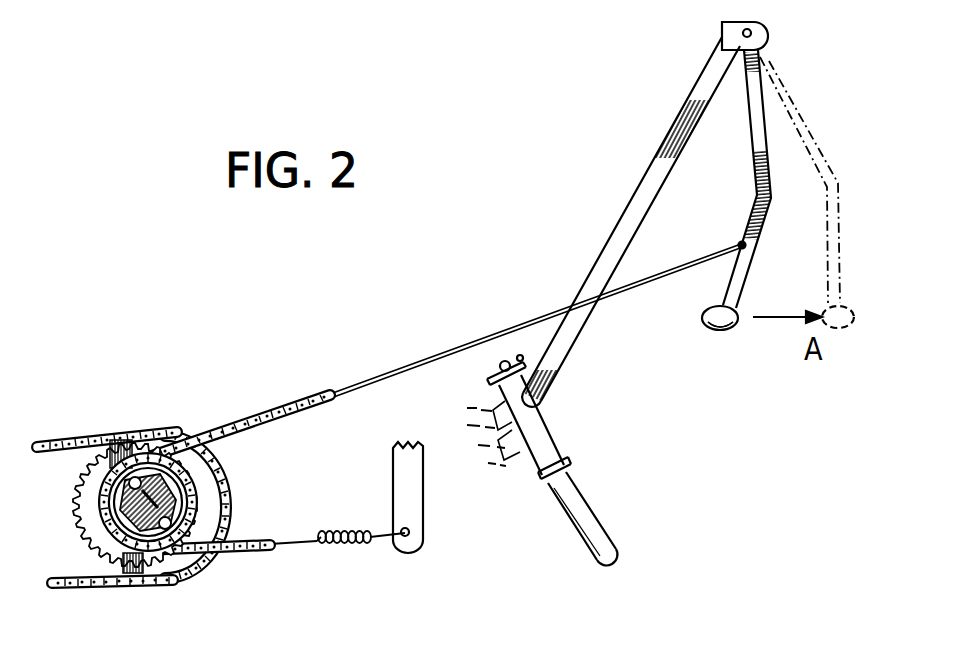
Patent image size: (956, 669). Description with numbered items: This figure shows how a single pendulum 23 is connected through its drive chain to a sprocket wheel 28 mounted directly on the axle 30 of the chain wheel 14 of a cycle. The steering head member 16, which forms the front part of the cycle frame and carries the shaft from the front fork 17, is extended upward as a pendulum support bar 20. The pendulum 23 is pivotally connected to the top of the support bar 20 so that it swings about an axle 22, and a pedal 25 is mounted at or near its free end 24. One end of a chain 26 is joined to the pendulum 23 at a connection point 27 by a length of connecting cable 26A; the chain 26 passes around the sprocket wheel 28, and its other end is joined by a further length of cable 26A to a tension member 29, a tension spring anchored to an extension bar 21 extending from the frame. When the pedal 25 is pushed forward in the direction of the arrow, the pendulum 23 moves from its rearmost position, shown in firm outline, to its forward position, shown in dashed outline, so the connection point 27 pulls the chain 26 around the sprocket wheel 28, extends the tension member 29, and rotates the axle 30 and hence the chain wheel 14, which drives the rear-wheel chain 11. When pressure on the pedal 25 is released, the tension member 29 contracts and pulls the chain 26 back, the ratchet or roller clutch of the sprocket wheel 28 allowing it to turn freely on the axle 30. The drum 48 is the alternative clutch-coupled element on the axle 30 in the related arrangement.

The chain 11 is at (58, 438).
The chain wheel 14 is at (100, 540).
The steering head member 16 is at (552, 447).
The front fork 17 is at (587, 517).
The pendulum support bar 20 is at (641, 190).
The extension bar 21 is at (407, 487).
The axle 22 is at (745, 33).
The pendulum 23 is at (752, 137).
The free end 24 is at (703, 298).
The pedal 25 is at (733, 330).
The chain 26 is at (252, 418).
The connecting cable 26A is at (432, 358).
The connection point 27 is at (746, 250).
The sprocket wheel 28 is at (131, 440).
The tension member 29 is at (363, 547).
The axle 30 is at (150, 515).
The drum 48 is at (187, 500).